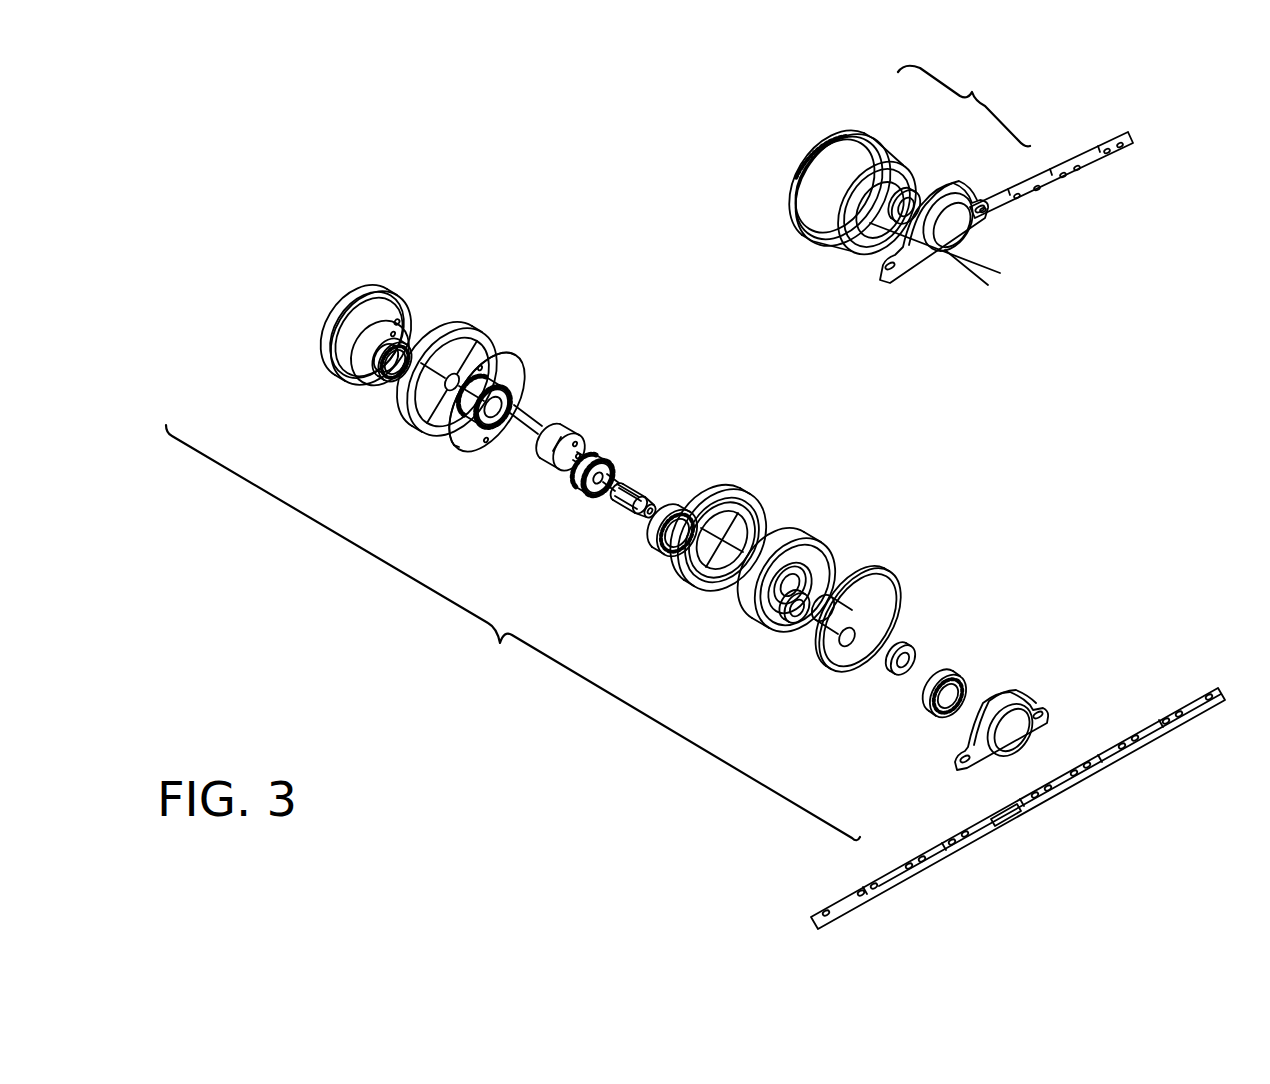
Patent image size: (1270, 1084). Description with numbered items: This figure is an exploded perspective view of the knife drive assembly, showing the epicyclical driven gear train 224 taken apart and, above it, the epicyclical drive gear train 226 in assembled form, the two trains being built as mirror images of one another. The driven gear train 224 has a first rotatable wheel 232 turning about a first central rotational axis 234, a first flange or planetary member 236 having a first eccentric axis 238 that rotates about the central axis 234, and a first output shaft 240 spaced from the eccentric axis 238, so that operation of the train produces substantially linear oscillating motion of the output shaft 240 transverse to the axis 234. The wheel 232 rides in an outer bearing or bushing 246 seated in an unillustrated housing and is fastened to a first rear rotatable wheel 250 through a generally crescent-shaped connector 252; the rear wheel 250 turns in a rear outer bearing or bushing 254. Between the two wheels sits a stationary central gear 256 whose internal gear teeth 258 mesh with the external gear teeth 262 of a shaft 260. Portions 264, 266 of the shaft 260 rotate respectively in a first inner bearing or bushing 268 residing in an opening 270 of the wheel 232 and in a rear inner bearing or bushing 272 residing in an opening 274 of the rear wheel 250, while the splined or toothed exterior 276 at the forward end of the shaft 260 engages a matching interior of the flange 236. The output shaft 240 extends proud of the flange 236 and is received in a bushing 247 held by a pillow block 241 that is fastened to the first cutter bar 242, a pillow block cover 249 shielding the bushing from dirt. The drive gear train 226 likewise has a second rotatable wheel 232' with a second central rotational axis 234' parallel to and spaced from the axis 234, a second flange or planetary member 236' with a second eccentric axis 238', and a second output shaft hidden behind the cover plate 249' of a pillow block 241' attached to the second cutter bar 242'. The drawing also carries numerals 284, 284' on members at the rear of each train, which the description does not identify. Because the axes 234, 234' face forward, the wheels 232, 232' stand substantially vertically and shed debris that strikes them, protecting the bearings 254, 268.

The epicyclical driven gear train 224 is at (513, 632).
The epicyclical drive gear train 226 is at (964, 102).
The first rotatable wheel 232 is at (750, 601).
The second rotatable wheel 232' is at (872, 237).
The first central rotational axis 234 is at (551, 381).
The second central rotational axis 234' is at (951, 304).
The first flange or planetary member 236 is at (754, 648).
The second flange or planetary member 236' is at (913, 163).
The first eccentric axis 238 is at (521, 496).
The second eccentric axis 238' is at (992, 250).
The first output shaft 240 is at (843, 640).
The pillow block 241 is at (1029, 701).
The pillow block 241' is at (938, 210).
The first cutter bar 242 is at (1018, 812).
The second cutter bar 242' is at (1103, 175).
The outer bearing or bushing 246 is at (735, 495).
The bushing 247 is at (946, 672).
The pillow block cover 249 is at (1058, 727).
The cover plate of pillow block 249' is at (1027, 222).
The first rear rotatable wheel 250 is at (413, 312).
The crescent-shaped connector 252 is at (553, 460).
The rear outer bearing or bushing 254 is at (420, 436).
The stationary central gear 256 is at (520, 360).
The internal gear teeth 258 is at (466, 428).
The shaft 260 is at (640, 449).
The external gear teeth 262 is at (612, 460).
The shaft portion 264 is at (618, 498).
The shaft portion 266 is at (606, 455).
The first inner bearing or bushing 268 is at (683, 508).
The opening 270 is at (790, 586).
The rear inner bearing or bushing 272 is at (388, 382).
The opening 274 is at (354, 390).
The splined or toothed exterior 276 is at (635, 515).
The pulley 284 is at (333, 339).
The pulley 284' is at (803, 190).